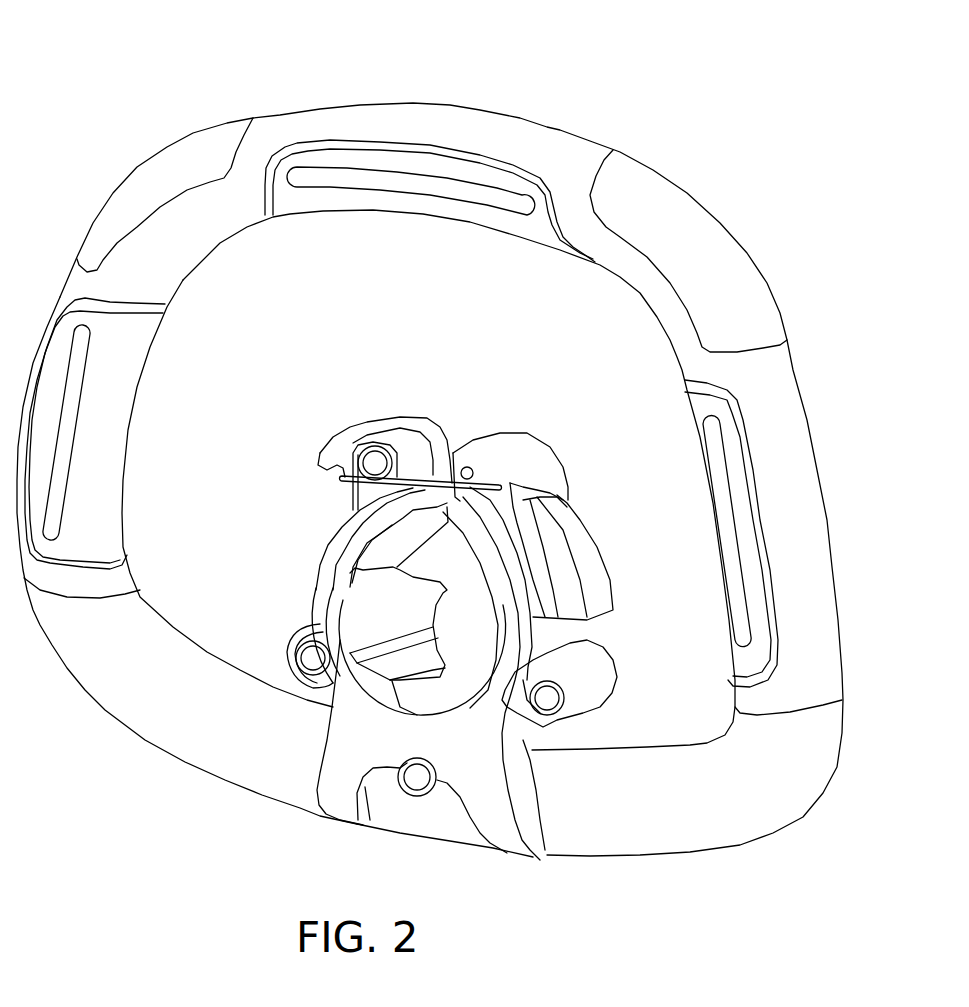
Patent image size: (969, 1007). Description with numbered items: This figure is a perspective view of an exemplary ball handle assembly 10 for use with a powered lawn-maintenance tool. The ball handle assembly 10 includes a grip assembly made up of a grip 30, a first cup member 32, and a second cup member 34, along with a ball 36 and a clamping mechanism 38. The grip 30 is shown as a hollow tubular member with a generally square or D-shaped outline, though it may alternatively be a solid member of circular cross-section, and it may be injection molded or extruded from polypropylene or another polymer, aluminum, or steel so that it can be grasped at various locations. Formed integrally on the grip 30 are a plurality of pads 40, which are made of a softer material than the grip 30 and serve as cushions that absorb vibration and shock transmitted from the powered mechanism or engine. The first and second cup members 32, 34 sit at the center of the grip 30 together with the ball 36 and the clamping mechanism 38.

The ball handle assembly 10 is at (108, 80).
The grip 30 is at (540, 148).
The first cup member 32 is at (320, 590).
The second cup member 34 is at (575, 627).
The ball 36 is at (367, 550).
The clamping mechanism 38 is at (531, 440).
The pads 40 is at (333, 203).